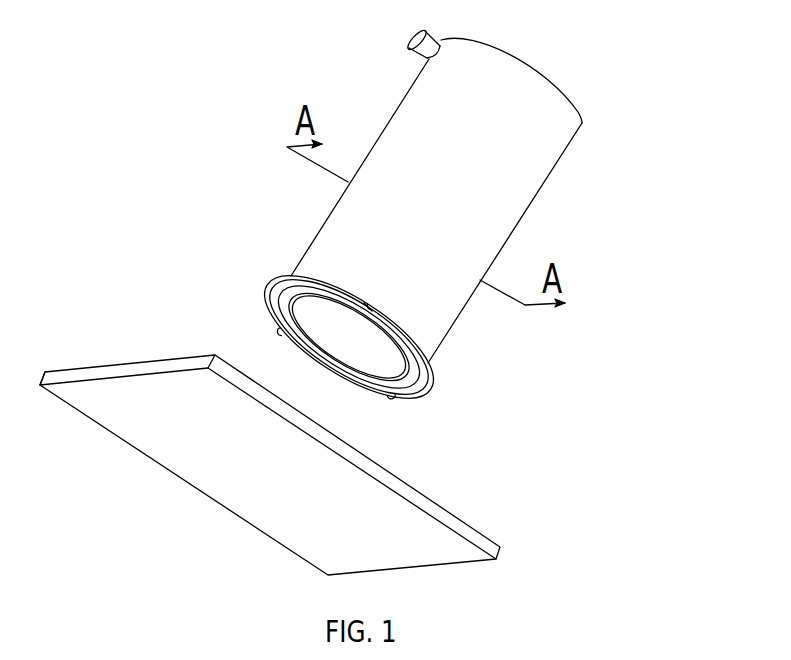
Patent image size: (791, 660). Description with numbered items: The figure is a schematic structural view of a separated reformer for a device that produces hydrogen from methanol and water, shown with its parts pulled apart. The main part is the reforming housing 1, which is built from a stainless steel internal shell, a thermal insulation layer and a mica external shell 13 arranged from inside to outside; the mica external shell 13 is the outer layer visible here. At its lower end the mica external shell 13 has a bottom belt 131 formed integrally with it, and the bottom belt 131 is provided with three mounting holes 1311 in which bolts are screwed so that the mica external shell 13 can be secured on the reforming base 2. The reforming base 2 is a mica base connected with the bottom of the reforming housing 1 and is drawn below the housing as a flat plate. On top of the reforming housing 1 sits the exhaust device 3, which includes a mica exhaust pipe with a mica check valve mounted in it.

The reforming housing 1 is at (466, 224).
The mica external shell 13 is at (498, 232).
The bottom belt 131 is at (432, 370).
The mounting hole 1311 is at (366, 307).
The exhaust device 3 is at (398, 40).
The reforming base 2 is at (236, 504).